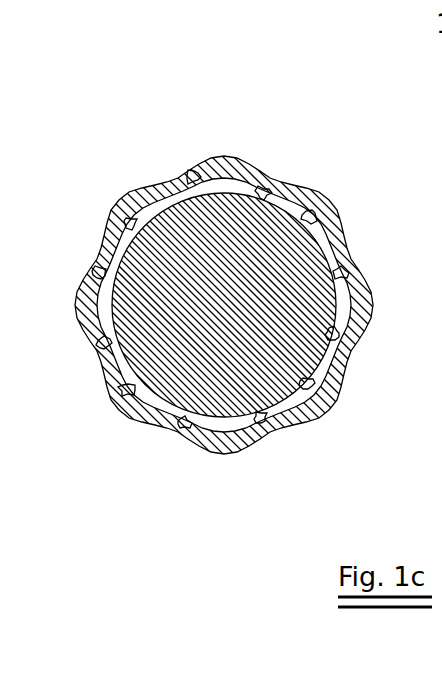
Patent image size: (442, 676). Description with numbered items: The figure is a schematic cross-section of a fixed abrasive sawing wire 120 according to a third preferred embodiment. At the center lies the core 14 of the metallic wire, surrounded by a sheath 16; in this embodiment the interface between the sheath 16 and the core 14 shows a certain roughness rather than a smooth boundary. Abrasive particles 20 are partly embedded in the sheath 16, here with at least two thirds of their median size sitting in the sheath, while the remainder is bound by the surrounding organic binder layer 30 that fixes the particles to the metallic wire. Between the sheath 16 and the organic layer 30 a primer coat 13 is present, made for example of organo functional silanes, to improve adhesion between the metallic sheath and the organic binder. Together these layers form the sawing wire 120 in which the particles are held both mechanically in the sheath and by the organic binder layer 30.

The fixed abrasive sawing wire 120 is at (221, 243).
The organic binder layer 30 is at (277, 430).
The core 14 is at (183, 370).
The primer coat 13 is at (110, 385).
The sheath 16 is at (153, 217).
The abrasive particles 20 is at (317, 210).